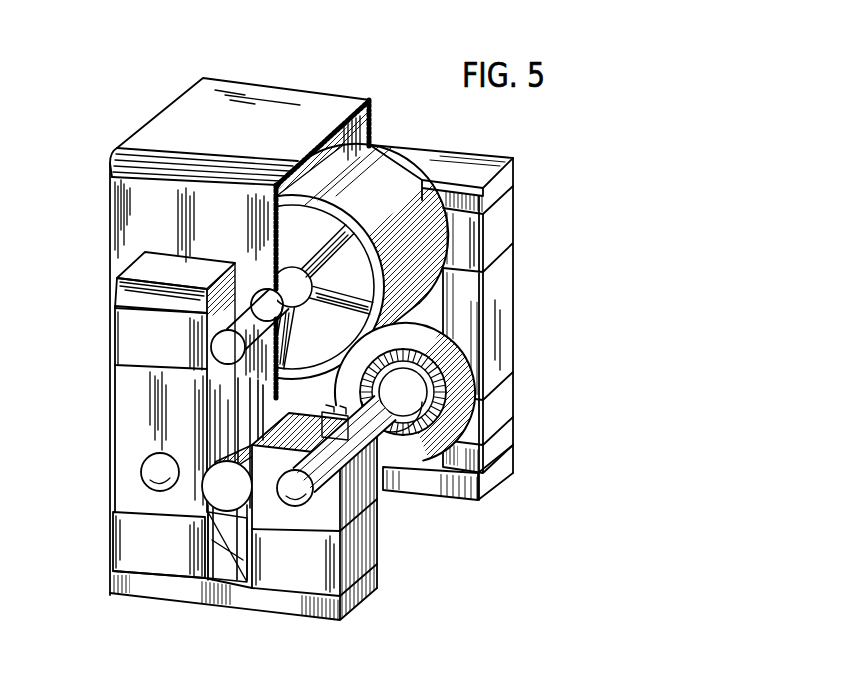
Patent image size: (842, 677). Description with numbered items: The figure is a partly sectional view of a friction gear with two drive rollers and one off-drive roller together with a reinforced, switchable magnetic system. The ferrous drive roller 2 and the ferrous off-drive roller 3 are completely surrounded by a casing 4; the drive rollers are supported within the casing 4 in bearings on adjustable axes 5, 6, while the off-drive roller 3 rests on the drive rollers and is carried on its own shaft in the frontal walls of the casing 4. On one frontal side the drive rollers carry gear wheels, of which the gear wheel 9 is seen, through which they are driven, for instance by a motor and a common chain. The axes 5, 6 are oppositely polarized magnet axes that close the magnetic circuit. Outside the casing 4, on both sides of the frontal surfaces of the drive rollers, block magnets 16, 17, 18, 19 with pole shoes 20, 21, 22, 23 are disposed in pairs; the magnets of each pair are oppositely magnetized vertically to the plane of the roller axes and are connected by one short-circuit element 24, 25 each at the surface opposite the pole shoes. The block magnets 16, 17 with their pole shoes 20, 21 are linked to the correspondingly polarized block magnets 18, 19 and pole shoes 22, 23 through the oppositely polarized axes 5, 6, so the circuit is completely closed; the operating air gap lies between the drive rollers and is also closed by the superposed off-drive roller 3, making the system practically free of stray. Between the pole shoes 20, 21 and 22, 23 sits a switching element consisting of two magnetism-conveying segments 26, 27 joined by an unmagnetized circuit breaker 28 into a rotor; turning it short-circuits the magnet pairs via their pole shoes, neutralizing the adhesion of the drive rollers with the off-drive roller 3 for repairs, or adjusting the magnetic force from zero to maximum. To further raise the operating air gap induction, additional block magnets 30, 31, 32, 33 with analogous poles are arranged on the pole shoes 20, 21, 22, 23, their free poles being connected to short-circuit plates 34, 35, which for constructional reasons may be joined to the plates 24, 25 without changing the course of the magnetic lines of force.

The drive roller 2 is at (472, 368).
The off-drive roller 3 is at (402, 178).
The casing 4 is at (117, 204).
The adjustable axis 5 is at (142, 472).
The adjustable axis 6 is at (303, 499).
The gear wheel 9 is at (418, 470).
The block magnet 16 is at (118, 552).
The block magnet 17 is at (363, 552).
The block magnet 18 is at (534, 426).
The block magnet 19 is at (507, 412).
The pole shoe 20 is at (118, 437).
The pole shoe 21 is at (363, 502).
The pole shoe 22 is at (535, 331).
The pole shoe 23 is at (505, 310).
The short-circuit element 24 is at (158, 592).
The short-circuit element 25 is at (508, 463).
The segment 26 is at (207, 512).
The segment 27 is at (230, 510).
The circuit breaker 28 is at (213, 508).
The additional block magnet 30 is at (114, 329).
The additional block magnet 31 is at (119, 326).
The additional block magnet 32 is at (535, 329).
The additional block magnet 33 is at (506, 218).
The short-circuit plate 34 is at (138, 268).
The short-circuit plate 35 is at (470, 166).